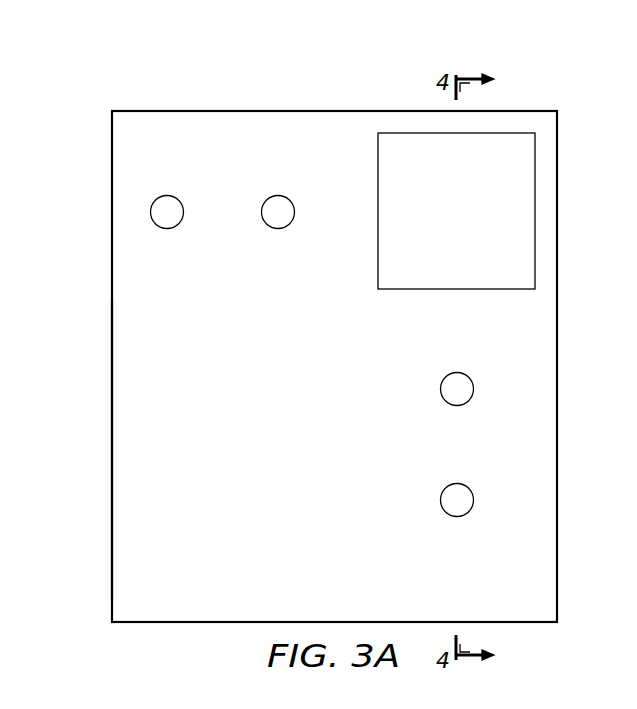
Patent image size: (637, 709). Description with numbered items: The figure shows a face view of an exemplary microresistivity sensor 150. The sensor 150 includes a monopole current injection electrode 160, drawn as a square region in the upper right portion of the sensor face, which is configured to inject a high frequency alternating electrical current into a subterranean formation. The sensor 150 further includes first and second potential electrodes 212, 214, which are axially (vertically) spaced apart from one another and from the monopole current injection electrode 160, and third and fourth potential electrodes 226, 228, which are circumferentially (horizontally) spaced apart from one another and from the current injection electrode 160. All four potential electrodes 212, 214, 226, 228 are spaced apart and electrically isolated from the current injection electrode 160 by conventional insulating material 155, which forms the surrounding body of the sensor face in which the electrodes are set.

The microresistivity sensor 150 is at (181, 100).
The insulating material 155 is at (130, 442).
The monopole current injection electrode 160 is at (478, 227).
The first potential electrode 212 is at (440, 389).
The second potential electrode 214 is at (440, 500).
The third potential electrode 226 is at (167, 229).
The fourth potential electrode 228 is at (278, 229).